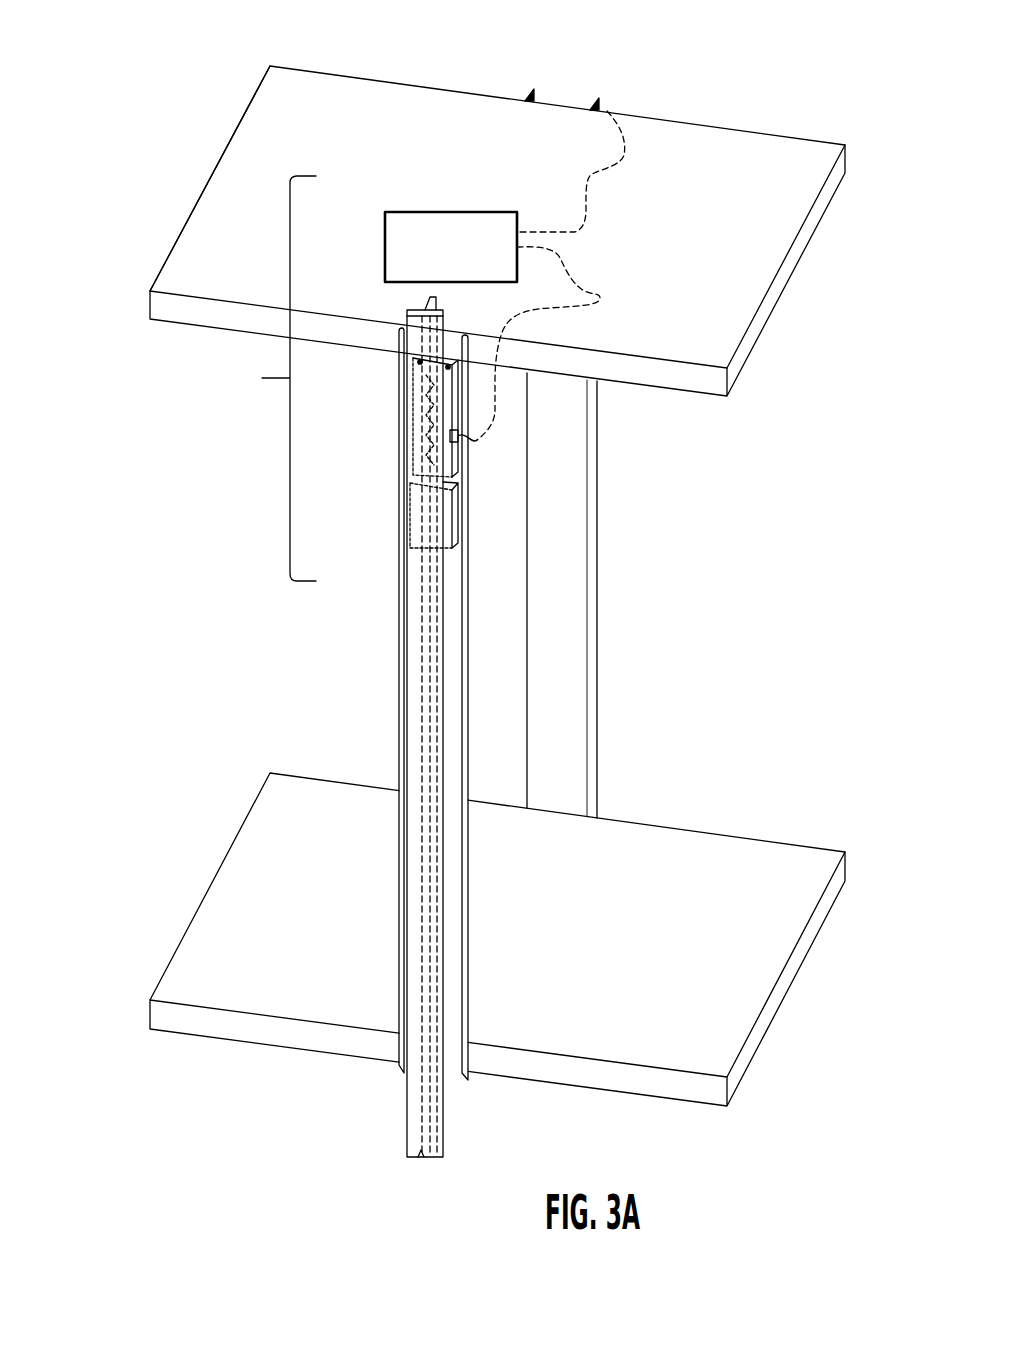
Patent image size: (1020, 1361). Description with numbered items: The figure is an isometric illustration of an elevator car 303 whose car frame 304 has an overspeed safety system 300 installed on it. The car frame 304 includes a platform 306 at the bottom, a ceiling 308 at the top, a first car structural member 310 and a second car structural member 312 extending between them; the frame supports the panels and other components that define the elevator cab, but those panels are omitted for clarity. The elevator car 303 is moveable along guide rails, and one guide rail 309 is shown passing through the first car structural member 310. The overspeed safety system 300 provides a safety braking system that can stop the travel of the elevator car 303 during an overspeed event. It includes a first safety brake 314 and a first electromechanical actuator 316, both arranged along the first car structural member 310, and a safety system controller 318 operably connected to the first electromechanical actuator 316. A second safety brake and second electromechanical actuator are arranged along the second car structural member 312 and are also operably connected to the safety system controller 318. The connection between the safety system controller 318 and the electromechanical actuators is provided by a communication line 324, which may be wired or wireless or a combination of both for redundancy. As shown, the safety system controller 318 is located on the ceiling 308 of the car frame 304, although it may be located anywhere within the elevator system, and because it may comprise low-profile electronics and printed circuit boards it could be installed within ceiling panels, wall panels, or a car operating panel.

The overspeed safety system 300 is at (269, 378).
The elevator car 303 is at (76, 208).
The car frame 304 is at (850, 152).
The platform 306 is at (193, 942).
The ceiling 308 is at (240, 163).
The guide rail 309 is at (440, 1128).
The first car structural member 310 is at (468, 710).
The second car structural member 312 is at (578, 640).
The first safety brake 314 is at (411, 508).
The first electromechanical actuator 316 is at (413, 420).
The safety system controller 318 is at (398, 227).
The communication line 324 is at (607, 167).